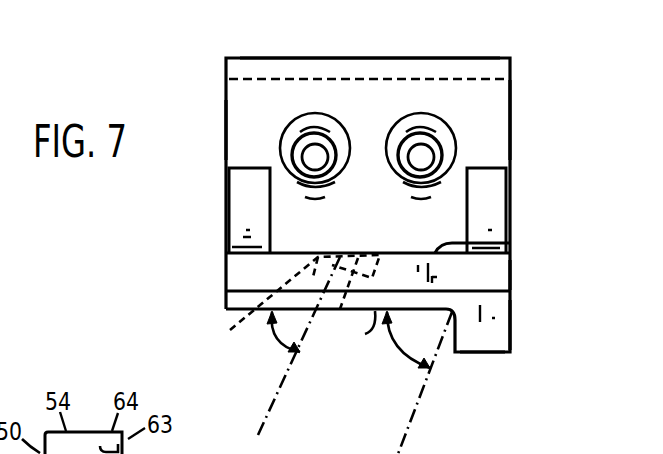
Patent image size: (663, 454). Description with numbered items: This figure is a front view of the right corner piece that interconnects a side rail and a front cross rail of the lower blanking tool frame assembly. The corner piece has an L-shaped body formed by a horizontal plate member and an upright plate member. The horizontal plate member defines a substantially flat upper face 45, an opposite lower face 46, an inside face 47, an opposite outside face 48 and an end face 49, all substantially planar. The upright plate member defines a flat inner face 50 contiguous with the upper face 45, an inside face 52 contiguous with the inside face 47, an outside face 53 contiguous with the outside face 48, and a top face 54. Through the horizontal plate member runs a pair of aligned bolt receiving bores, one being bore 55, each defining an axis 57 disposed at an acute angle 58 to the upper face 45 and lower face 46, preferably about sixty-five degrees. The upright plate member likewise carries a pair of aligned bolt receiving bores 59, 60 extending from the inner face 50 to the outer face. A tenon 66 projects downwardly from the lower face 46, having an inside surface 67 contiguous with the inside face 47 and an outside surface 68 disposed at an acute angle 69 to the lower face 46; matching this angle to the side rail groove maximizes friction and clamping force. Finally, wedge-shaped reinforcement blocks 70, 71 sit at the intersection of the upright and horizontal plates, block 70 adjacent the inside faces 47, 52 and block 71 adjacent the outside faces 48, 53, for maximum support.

The upper face 45 is at (512, 244).
The lower face 46 is at (356, 337).
The inside face 47 is at (511, 276).
The outside face 48 is at (226, 273).
The end face 49 is at (232, 297).
The inner face 50 is at (243, 102).
The inside face 52 is at (511, 112).
The outside face 53 is at (226, 130).
The top face 54 is at (371, 58).
The bolt receiving bore 55 is at (291, 303).
The axis 57 is at (280, 388).
The acute angle 58 is at (285, 343).
The bolt receiving bore 59 is at (427, 137).
The bolt receiving bore 60 is at (301, 138).
The tenon 66 is at (480, 338).
The inside surface 67 is at (511, 328).
The outside surface 68 is at (448, 330).
The acute angle 69 is at (398, 345).
The reinforcement block 70 is at (495, 213).
The reinforcement block 71 is at (238, 185).